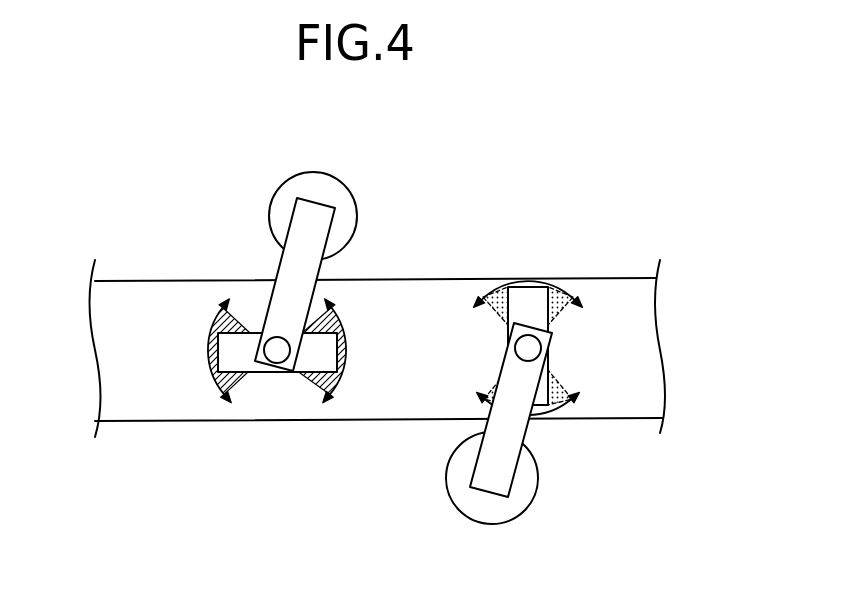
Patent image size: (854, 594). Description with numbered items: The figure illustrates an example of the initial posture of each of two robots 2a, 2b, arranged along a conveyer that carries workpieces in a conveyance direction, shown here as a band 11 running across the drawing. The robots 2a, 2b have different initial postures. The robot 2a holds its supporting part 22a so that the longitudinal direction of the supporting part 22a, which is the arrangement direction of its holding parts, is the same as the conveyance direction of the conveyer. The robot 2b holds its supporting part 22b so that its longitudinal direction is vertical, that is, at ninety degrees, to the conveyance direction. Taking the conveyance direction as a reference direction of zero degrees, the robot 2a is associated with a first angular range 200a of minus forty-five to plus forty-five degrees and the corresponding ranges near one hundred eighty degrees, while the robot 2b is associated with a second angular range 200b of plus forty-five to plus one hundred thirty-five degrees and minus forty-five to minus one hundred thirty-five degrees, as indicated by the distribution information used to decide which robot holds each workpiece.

The belt / conveyance path 11 is at (600, 279).
The robot 2a is at (353, 170).
The robot 2b is at (548, 523).
The supporting part 22a is at (315, 365).
The supporting part 22b is at (527, 295).
The first angular range 200a is at (246, 380).
The second angular range 200b is at (486, 310).